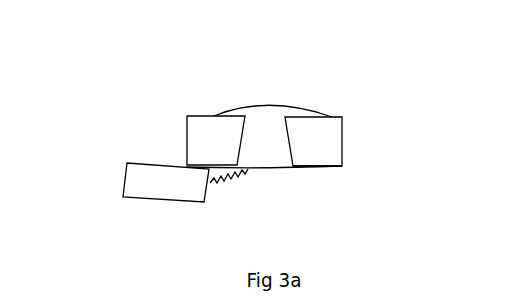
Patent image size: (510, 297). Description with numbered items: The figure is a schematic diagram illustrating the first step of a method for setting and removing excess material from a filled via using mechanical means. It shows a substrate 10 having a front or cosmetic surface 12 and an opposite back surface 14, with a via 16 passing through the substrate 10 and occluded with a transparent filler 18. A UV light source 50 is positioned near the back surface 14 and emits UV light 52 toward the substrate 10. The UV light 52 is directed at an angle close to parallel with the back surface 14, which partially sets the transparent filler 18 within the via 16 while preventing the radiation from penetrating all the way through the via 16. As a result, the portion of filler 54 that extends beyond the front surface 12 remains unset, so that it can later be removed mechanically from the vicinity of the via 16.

The substrate 10 is at (300, 128).
The front or cosmetic side or surface 12 is at (340, 113).
The back side or surface 14 is at (332, 167).
The via 16 is at (290, 135).
The transparent filler 18 is at (287, 168).
The UV light source 50 is at (127, 180).
The UV light 52 is at (228, 182).
The portion of filler 54 is at (258, 105).